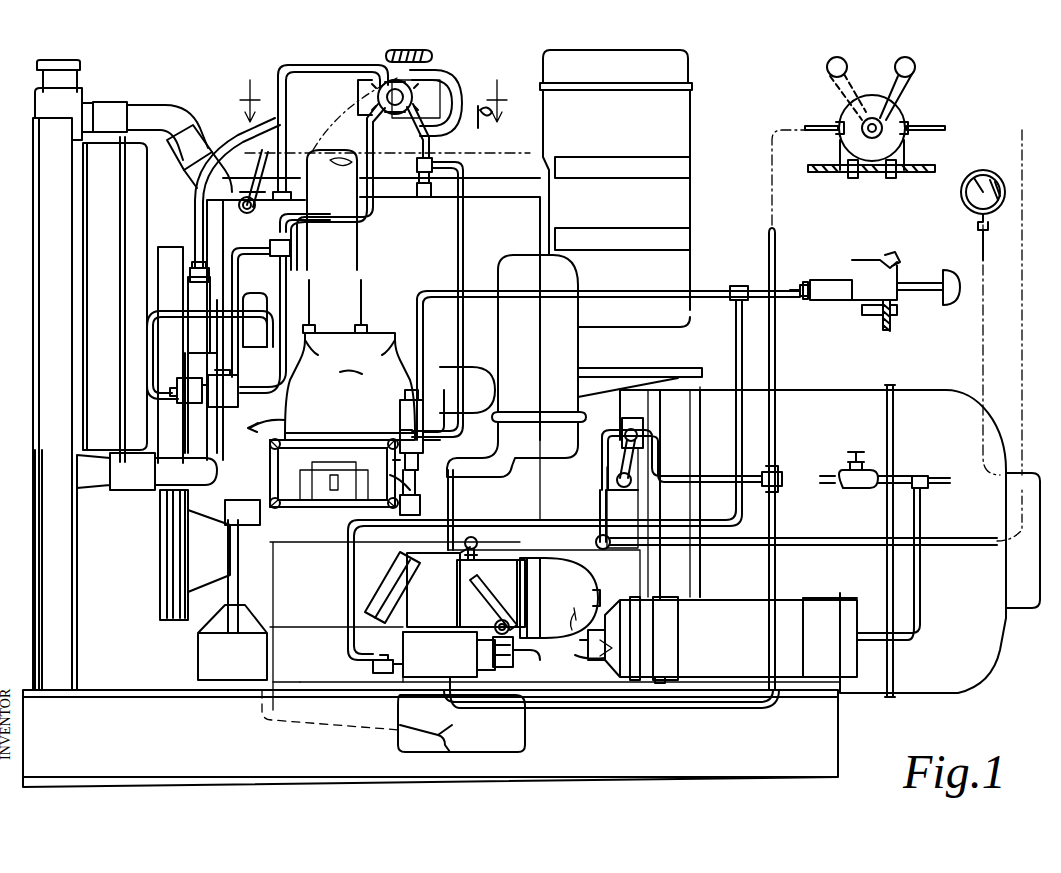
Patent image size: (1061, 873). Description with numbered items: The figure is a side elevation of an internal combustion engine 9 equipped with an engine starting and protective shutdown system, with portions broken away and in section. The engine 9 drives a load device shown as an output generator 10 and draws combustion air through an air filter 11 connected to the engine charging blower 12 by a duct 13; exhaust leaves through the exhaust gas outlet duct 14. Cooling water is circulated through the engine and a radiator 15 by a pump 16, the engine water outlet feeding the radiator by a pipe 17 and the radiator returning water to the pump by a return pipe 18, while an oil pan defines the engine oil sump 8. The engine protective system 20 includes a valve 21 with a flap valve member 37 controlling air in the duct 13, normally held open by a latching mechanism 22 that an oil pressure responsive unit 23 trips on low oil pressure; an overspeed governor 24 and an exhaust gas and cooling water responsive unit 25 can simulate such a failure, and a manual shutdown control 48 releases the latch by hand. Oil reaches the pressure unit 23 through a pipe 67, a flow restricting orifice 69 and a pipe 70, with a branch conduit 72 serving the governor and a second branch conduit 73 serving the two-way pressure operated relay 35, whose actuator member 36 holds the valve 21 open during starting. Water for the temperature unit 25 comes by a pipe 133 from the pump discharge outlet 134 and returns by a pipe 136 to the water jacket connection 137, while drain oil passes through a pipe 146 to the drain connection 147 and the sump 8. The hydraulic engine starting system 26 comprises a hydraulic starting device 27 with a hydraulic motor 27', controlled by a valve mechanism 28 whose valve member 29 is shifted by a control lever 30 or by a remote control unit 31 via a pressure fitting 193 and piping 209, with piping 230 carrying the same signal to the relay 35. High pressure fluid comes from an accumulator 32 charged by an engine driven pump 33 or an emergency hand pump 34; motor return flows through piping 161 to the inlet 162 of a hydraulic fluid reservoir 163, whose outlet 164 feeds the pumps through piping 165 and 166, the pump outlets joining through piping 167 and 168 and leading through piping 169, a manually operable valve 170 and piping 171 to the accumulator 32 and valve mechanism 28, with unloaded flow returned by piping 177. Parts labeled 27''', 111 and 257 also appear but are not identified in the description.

The engine oil sump 8 is at (440, 735).
The internal combustion engine 9 is at (296, 705).
The output generator 10 is at (912, 402).
The air filter 11 is at (670, 120).
The engine charging blower 12 is at (370, 348).
The duct 13 is at (358, 268).
The exhaust gas outlet duct 14 is at (432, 66).
The radiator 15 is at (50, 229).
The pump 16 is at (200, 297).
The pipe 17 is at (190, 90).
The return pipe 18 is at (118, 490).
The engine protective system 20 is at (236, 494).
The valve 21 is at (332, 507).
The latching mechanism 22 is at (272, 507).
The oil pressure responsive unit 23 is at (282, 418).
The overspeed governor 24 is at (182, 403).
The exhaust gas and cooling water responsive unit 25 is at (425, 95).
The hydraulic engine starting system 26 is at (580, 640).
The hydraulic starting device 27 is at (438, 580).
The hydraulic motor 27' is at (390, 587).
The pressure vessel 27''' is at (574, 589).
The valve mechanism 28 is at (410, 668).
The valve member 29 is at (520, 666).
The control lever 30 is at (490, 598).
The remote control unit 31 is at (864, 268).
The pressure storing accumulator 32 is at (735, 600).
The engine driven pump 33 is at (630, 418).
The emergency hand pump 34 is at (895, 108).
The pressure operated relay 35 is at (420, 455).
The actuator member 36 is at (420, 500).
The flap valve member 37 is at (348, 440).
The manual shutdown control 48 is at (365, 378).
The pipe 67 is at (416, 170).
The flow restricting orifice 69 is at (424, 197).
The pipe 70 is at (290, 313).
The branch conduit 72 is at (268, 236).
The second branch conduit 73 is at (465, 255).
The pipe 111 is at (148, 358).
The pipe 133 is at (492, 120).
The pressure discharge outlet of the cooling water pump 134 is at (197, 250).
The pipe 136 is at (258, 124).
The cooling water jacket of the engine 137 is at (200, 193).
The pipe 146 is at (330, 62).
The connection to oil drain galleys 147 is at (292, 193).
The piping 161 is at (455, 572).
The inlet 162 is at (478, 540).
The hydraulic fluid reservoir 163 is at (532, 470).
The outlet 164 is at (608, 530).
The piping 165 is at (596, 541).
The piping 166 is at (780, 555).
The piping 167 is at (693, 470).
The piping 168 is at (780, 333).
The piping 169 is at (922, 552).
The manually operable valve 170 is at (856, 492).
The piping 171 is at (775, 660).
The piping 177 is at (615, 480).
The pressure fitting 193 is at (392, 660).
The piping 209 is at (735, 356).
The piping 230 is at (615, 291).
The stub 257 is at (352, 80).